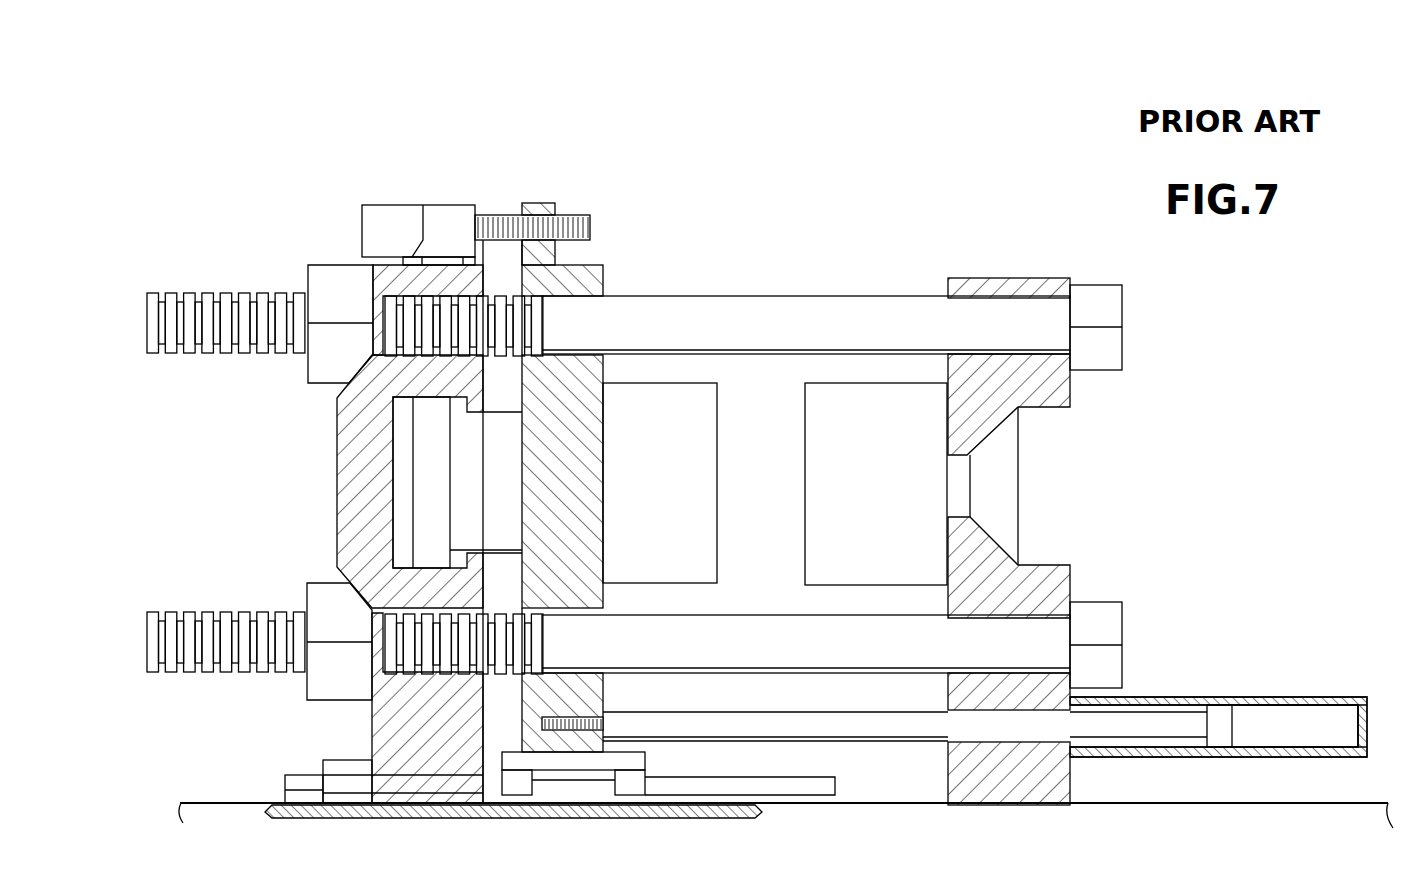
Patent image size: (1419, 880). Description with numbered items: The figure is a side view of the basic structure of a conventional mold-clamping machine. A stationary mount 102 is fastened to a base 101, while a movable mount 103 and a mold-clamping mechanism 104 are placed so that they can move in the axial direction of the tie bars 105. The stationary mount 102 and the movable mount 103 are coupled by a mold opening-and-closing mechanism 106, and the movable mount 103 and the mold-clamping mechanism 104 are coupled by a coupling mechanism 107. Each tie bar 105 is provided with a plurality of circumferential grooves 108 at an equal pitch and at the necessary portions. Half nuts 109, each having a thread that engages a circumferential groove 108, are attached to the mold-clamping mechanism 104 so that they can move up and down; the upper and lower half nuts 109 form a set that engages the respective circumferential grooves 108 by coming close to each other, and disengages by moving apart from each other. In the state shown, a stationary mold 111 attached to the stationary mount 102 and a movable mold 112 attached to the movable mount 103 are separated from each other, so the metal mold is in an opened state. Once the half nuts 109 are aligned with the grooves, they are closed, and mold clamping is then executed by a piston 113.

The base 101 is at (218, 802).
The stationary mount 102 is at (1005, 278).
The movable mount 103 is at (590, 270).
The mold-clamping mechanism 104 is at (367, 483).
The tie bar 105 is at (785, 322).
The mold opening-and-closing mechanism 106 is at (1263, 697).
The coupling mechanism 107 is at (452, 186).
The circumferential groove 108 is at (237, 298).
The half nut 109 is at (340, 288).
The stationary mold 111 is at (835, 513).
The movable mold 112 is at (683, 443).
The piston 113 is at (483, 450).